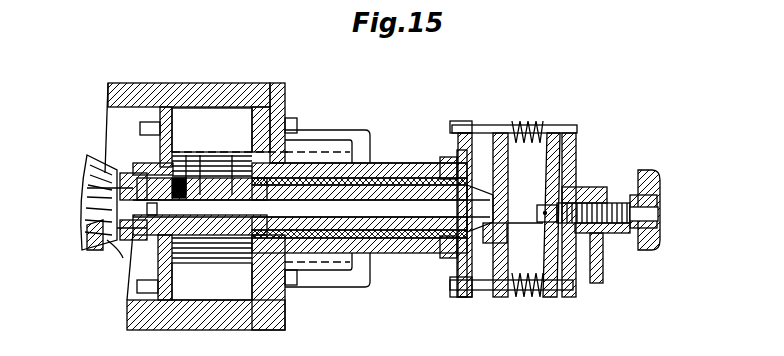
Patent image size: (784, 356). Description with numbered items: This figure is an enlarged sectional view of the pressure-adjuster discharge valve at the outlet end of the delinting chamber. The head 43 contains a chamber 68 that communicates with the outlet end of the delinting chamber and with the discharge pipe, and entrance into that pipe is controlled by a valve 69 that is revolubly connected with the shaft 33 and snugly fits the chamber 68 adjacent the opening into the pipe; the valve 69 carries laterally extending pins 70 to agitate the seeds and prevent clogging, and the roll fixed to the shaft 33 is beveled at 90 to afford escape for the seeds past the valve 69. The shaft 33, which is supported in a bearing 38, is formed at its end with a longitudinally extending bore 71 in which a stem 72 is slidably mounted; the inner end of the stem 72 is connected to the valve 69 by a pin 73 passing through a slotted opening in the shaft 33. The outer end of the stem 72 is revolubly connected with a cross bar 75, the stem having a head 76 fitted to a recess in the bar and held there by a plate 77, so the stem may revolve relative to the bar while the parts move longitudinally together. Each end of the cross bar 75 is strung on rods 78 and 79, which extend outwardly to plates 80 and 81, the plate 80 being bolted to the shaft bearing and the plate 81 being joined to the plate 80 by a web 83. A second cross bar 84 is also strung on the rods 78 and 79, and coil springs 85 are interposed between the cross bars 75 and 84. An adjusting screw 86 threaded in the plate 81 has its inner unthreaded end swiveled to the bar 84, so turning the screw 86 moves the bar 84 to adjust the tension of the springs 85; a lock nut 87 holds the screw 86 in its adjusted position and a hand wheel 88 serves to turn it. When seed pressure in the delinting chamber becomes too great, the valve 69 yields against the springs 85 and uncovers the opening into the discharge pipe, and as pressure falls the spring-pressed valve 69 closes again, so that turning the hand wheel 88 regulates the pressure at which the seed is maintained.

The shaft 33 is at (310, 200).
The bearing 38 is at (372, 135).
The head 43 is at (330, 270).
The chamber 68 is at (231, 204).
The valve 69 is at (172, 128).
The laterally extending pins 70 is at (140, 125).
The longitudinally extending bore 71 is at (333, 200).
The stem 72 is at (311, 198).
The pin 73 is at (87, 188).
The cross bar 75 is at (508, 163).
The head 76 is at (490, 212).
The plate 77 is at (457, 262).
The rod 78 is at (480, 130).
The rod 79 is at (478, 292).
The plate 80 is at (452, 128).
The plate 81 is at (580, 185).
The web 83 is at (525, 233).
The second cross bar 84 is at (580, 132).
The coil springs 85 is at (530, 118).
The adjusting screw 86 is at (613, 198).
The lock nut 87 is at (605, 272).
The hand wheel 88 is at (660, 178).
The beveled end 90 is at (85, 243).